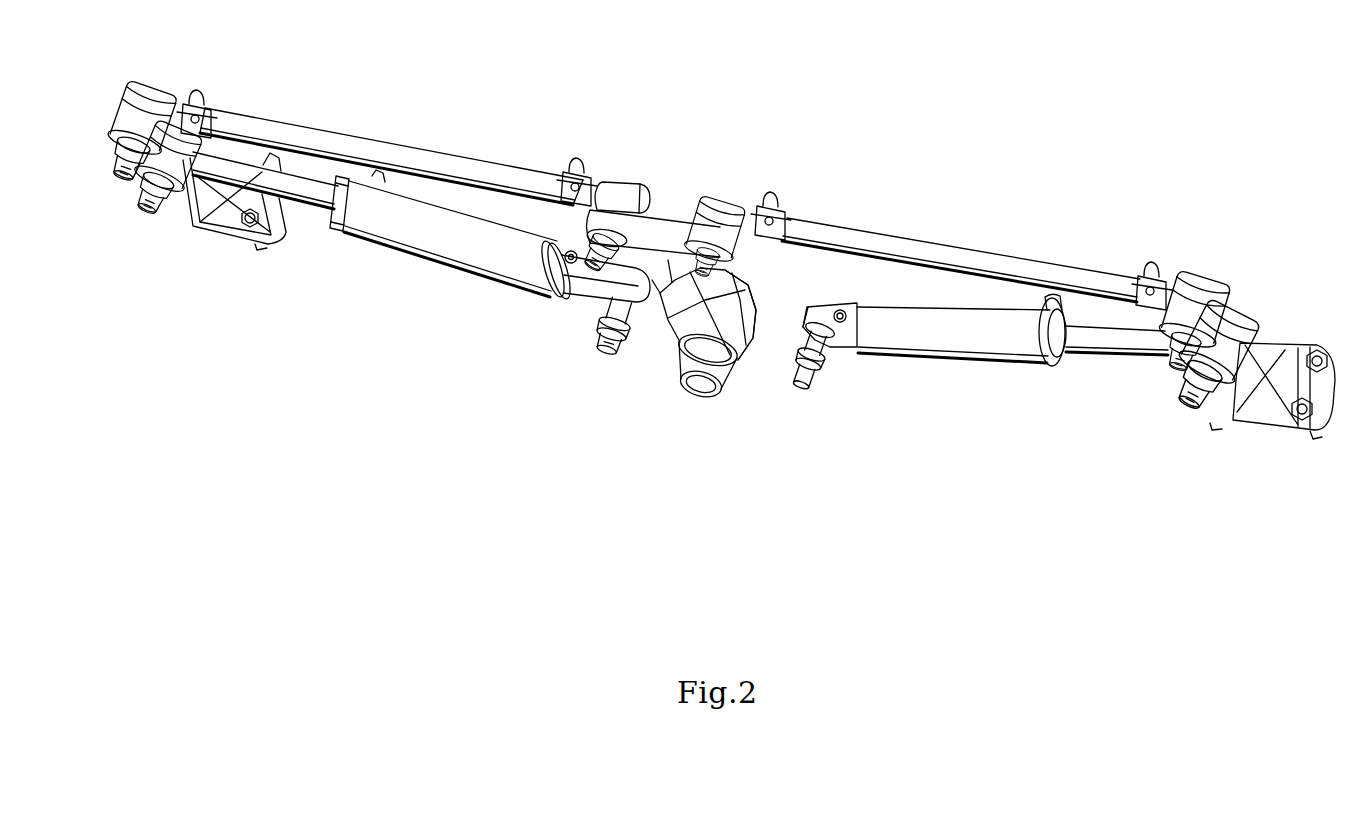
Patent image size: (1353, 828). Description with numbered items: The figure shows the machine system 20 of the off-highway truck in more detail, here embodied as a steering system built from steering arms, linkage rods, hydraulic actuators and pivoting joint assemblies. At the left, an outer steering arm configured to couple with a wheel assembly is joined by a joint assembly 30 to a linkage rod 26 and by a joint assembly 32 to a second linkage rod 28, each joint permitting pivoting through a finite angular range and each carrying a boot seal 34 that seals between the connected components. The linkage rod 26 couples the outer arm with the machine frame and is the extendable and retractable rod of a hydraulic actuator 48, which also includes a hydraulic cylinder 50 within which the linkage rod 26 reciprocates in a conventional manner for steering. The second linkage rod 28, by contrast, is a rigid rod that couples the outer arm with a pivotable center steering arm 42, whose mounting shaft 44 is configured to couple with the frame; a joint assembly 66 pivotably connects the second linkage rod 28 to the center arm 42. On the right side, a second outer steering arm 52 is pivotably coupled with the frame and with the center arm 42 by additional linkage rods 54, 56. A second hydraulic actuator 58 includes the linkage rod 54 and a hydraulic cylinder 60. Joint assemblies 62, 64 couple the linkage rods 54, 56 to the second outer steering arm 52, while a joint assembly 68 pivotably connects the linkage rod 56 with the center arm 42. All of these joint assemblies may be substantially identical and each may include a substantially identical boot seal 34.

The machine system 20 is at (288, 86).
The linkage rod 26 is at (290, 204).
The second linkage rod 28 is at (240, 117).
The joint assembly 30 is at (132, 224).
The joint assembly 32 is at (112, 179).
The boot seal 34 is at (153, 90).
The center steering arm 42 is at (740, 354).
The mounting shaft 44 is at (700, 390).
The hydraulic actuator 48 is at (446, 269).
The hydraulic cylinder 50 is at (358, 232).
The second outer steering arm 52 is at (1257, 423).
The linkage rod 54 is at (1113, 353).
The linkage rod 56 is at (1097, 277).
The second hydraulic actuator 58 is at (986, 379).
The hydraulic cylinder 60 is at (900, 350).
The joint assembly 62 is at (1175, 383).
The joint assembly 64 is at (1196, 426).
The joint assembly 66 is at (584, 250).
The joint assembly 68 is at (732, 279).